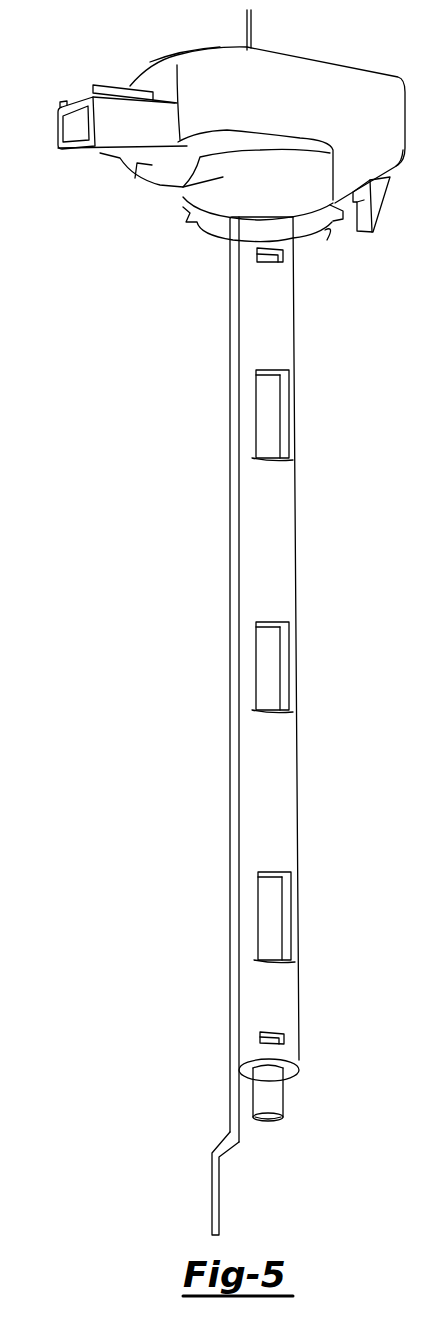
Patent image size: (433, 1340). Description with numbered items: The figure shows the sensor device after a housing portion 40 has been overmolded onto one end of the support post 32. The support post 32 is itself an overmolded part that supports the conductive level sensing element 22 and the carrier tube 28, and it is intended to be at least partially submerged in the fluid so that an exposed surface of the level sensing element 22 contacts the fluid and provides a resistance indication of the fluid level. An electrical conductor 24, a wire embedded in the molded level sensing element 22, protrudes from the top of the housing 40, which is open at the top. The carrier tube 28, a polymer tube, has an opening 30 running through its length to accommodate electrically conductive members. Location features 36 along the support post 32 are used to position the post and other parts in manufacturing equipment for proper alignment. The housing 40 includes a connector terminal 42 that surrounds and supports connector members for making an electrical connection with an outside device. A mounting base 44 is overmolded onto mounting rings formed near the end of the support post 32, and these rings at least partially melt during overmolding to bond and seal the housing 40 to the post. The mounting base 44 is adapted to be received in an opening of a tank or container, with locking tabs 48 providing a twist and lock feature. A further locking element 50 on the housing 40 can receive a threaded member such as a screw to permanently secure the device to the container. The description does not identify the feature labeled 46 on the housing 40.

The conductive level sensing element 22 is at (230, 477).
The electrical conductor 24 is at (250, 26).
The carrier tube 28 is at (277, 1102).
The opening 30 is at (270, 1119).
The support post 32 is at (287, 567).
The location features 36 is at (285, 1038).
The housing portion 40 is at (337, 66).
The connector terminal 42 is at (84, 112).
The mounting base 44 is at (198, 222).
The housing upper wall 46 is at (205, 70).
The locking tabs 48 is at (328, 228).
The locking element 50 is at (378, 202).